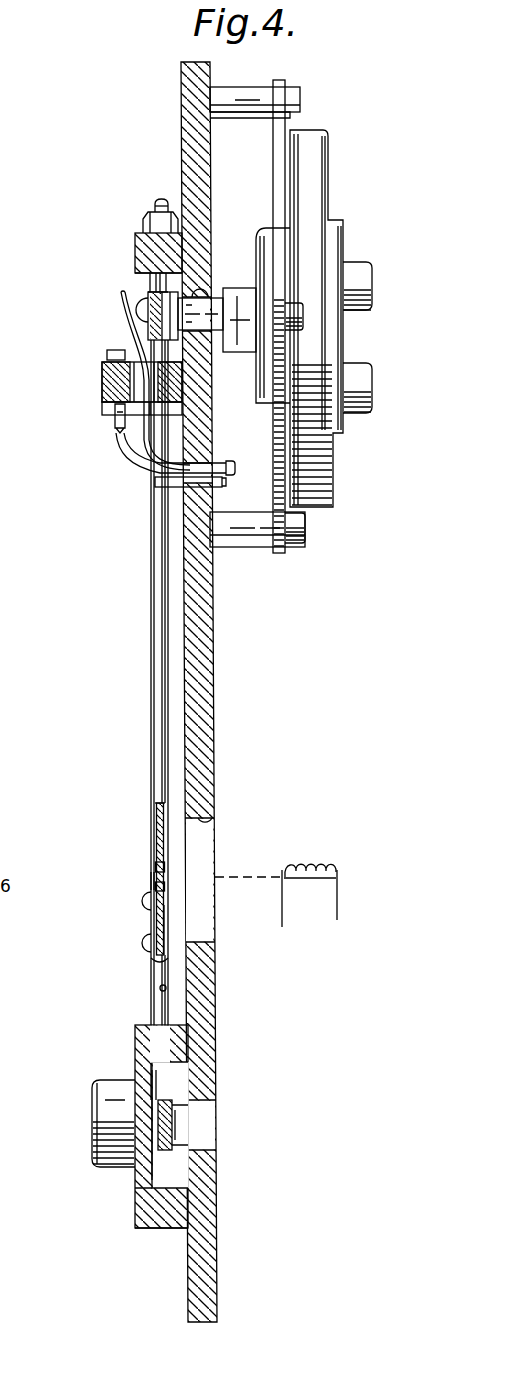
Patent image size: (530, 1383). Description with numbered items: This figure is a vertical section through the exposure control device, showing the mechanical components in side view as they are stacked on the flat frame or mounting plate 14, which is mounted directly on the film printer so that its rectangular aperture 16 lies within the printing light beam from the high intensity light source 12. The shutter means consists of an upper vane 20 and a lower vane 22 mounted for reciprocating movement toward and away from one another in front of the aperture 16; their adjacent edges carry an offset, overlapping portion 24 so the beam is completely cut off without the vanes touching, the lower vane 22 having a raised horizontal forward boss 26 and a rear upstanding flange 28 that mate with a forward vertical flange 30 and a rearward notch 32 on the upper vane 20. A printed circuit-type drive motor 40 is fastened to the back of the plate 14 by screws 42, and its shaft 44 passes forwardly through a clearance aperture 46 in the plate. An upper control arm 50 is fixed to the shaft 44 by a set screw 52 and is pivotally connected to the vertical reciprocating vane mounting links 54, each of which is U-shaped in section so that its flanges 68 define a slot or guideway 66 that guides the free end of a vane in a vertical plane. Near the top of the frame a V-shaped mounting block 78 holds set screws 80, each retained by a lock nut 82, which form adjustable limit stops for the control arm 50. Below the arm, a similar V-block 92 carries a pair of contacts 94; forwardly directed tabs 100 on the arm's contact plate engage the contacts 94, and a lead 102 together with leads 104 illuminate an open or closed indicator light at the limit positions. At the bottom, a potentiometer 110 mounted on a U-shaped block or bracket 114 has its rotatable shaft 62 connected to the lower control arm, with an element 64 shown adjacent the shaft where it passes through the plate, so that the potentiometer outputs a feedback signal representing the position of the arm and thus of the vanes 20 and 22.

The high intensity light source 12 is at (329, 918).
The mounting plate 14 is at (214, 750).
The rectangular aperture 16 is at (212, 832).
The upper vane 20 is at (157, 815).
The lower vane 22 is at (160, 920).
The offset, overlapping portion 24 is at (144, 883).
The raised horizontal forward boss 26 is at (156, 900).
The rear generally vertical upstanding flange 28 is at (160, 881).
The forward, generally vertical flange 30 is at (158, 886).
The rearward notch 32 is at (158, 870).
The drive motor 40 is at (305, 146).
The screws 42 is at (290, 88).
The shaft 44 is at (206, 300).
The clearance aperture 46 is at (200, 292).
The upper control arm 50 is at (150, 297).
The set screw 52 is at (152, 246).
The vane mounting links 54 is at (152, 708).
The rotatable shaft 62 is at (136, 1178).
The adjusting nut 64 is at (176, 1126).
The slot or guideway 66 is at (160, 990).
The flanges 68 is at (156, 966).
The V-shaped mounting block 78 is at (136, 268).
The set screws 80 is at (161, 200).
The lock nut 82 is at (149, 213).
The V-block 92 is at (102, 388).
The contacts 94 is at (102, 412).
The tabs 100 is at (114, 350).
The lead 102 is at (148, 436).
The leads 104 is at (170, 482).
The potentiometer 110 is at (80, 1109).
The U-shaped block or bracket 114 is at (164, 1220).